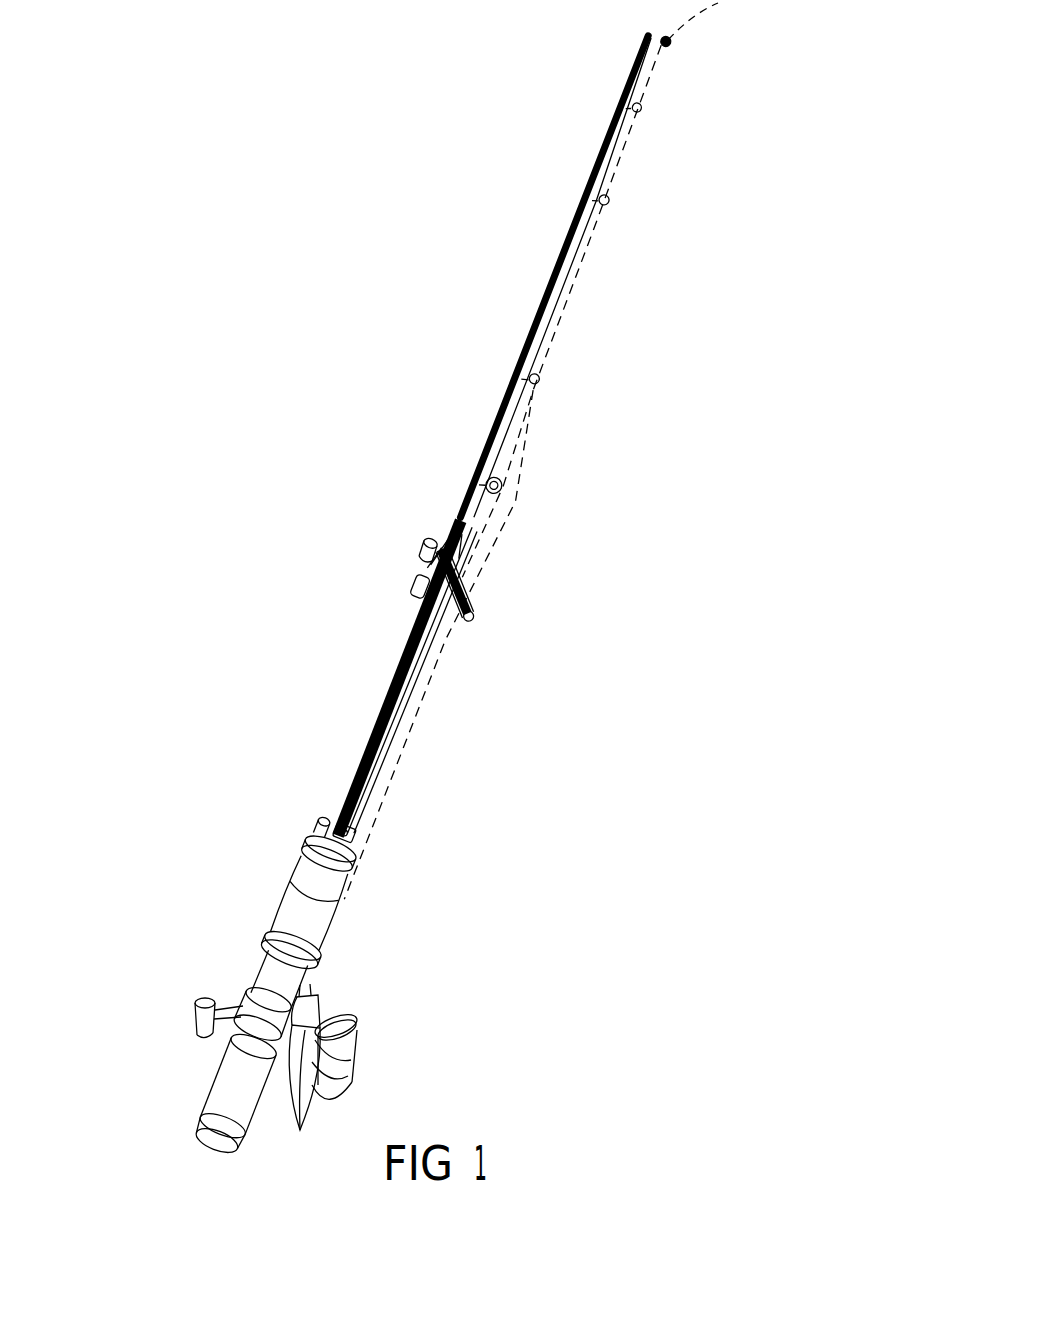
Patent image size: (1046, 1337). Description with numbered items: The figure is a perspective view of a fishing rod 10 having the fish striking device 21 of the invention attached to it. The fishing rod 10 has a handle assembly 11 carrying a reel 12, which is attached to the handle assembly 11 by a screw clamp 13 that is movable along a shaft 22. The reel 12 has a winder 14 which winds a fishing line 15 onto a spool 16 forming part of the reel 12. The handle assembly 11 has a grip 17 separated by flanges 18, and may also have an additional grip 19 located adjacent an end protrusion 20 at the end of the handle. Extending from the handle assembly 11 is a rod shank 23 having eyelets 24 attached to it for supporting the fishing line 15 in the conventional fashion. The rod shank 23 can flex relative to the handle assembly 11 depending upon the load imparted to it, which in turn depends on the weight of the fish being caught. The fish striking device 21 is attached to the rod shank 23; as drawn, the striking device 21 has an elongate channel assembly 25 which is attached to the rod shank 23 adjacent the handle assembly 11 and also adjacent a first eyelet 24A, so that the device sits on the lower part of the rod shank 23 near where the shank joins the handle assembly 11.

The fishing rod 10 is at (687, 302).
The handle assembly 11 is at (187, 970).
The reel 12 is at (388, 1017).
The screw clamp 13 is at (243, 1024).
The winder 14 is at (294, 1094).
The fishing line 15 is at (531, 431).
The spool 16 is at (321, 1030).
The grip 17 is at (300, 870).
The flanges 18 is at (316, 836).
The additional grip 19 is at (231, 1082).
The end protrusion 20 is at (212, 1143).
The fish striking device 21 is at (382, 612).
The shaft 22 is at (260, 986).
The rod shank 23 is at (556, 266).
The eyelets 24 is at (641, 108).
The first eyelet 24A is at (499, 484).
The elongate channel assembly 25 is at (418, 678).